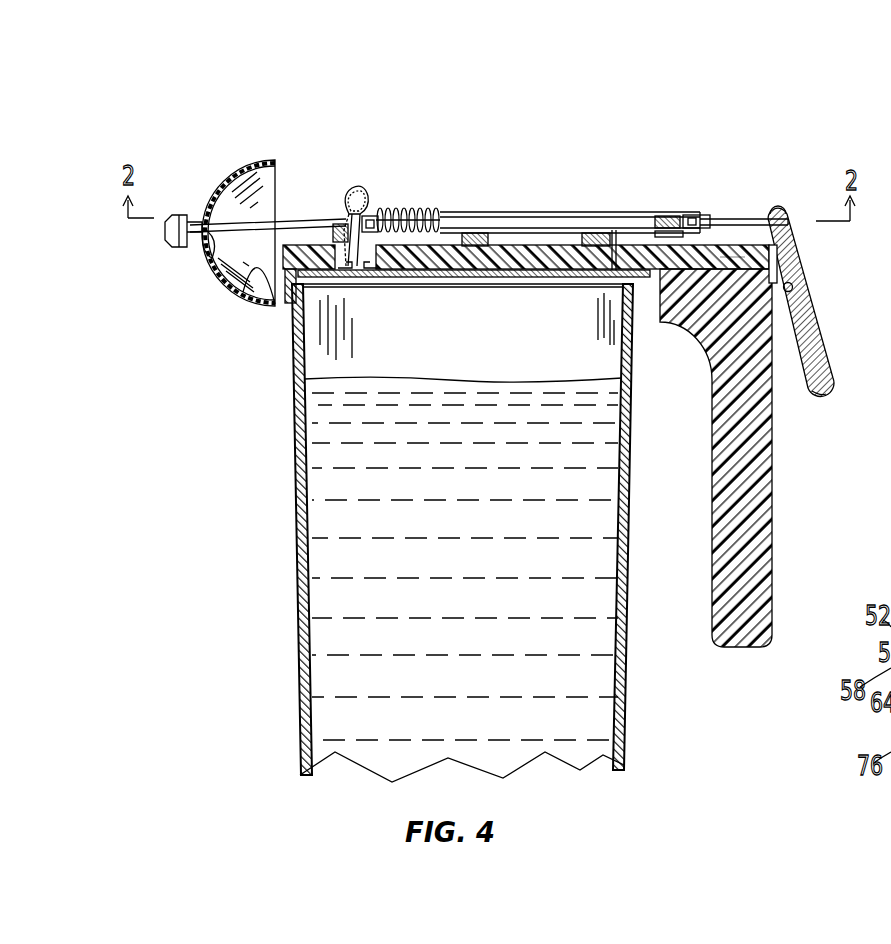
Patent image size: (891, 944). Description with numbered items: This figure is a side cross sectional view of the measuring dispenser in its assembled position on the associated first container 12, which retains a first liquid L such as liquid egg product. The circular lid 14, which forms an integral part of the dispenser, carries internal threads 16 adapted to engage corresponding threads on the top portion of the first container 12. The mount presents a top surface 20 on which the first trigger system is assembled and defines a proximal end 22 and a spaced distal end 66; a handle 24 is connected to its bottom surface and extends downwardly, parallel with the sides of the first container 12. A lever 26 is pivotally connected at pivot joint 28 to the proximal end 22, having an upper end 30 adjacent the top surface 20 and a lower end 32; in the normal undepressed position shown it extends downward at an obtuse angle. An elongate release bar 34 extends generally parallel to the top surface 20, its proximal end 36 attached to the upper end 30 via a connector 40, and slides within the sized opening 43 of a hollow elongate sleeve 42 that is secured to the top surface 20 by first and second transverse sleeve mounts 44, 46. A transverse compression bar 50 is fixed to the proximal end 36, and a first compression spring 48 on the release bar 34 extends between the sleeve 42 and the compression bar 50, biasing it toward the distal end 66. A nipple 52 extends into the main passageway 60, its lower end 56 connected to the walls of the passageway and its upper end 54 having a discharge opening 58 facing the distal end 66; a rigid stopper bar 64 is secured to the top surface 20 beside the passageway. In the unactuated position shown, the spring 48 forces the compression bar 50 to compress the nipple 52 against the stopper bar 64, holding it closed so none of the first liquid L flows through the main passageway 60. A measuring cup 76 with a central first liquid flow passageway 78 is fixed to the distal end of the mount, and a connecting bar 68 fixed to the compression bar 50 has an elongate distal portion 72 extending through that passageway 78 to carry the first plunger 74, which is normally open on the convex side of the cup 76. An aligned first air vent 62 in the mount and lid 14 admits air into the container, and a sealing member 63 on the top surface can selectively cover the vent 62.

The first container 12 is at (295, 470).
The lid 14 is at (292, 290).
The internal threads 16 is at (295, 347).
The top surface 20 is at (740, 257).
The proximal end 22 is at (793, 253).
The handle 24 is at (757, 547).
The lever 26 is at (820, 323).
The pivot joint 28 is at (793, 285).
The upper end 30 is at (772, 208).
The lower end 32 is at (823, 393).
The elongate release bar 34 is at (667, 218).
The proximal end 36 is at (700, 217).
The connector 40 is at (733, 257).
The hollow elongate sleeve 42 is at (500, 212).
The sized opening 43 is at (640, 223).
The first transverse sleeve mount 44 is at (577, 233).
The second transverse sleeve mount 46 is at (460, 235).
The first compression spring 48 is at (413, 208).
The transverse compression bar 50 is at (370, 218).
The nipple 52 is at (363, 190).
The upper end 54 is at (355, 188).
The lower end 56 is at (360, 273).
The discharge opening 58 is at (343, 200).
The main passageway 60 is at (362, 273).
The first air vent 62 is at (613, 237).
The sealing member 63 is at (667, 236).
The rigid stopper bar 64 is at (340, 225).
The distal end 66 is at (250, 297).
The connecting bar 68 is at (257, 218).
The elongate distal portion 72 is at (196, 219).
The first plunger 74 is at (168, 238).
The measuring cup 76 is at (233, 170).
The first liquid flow passageway 78 is at (212, 265).
The first liquid L is at (362, 385).